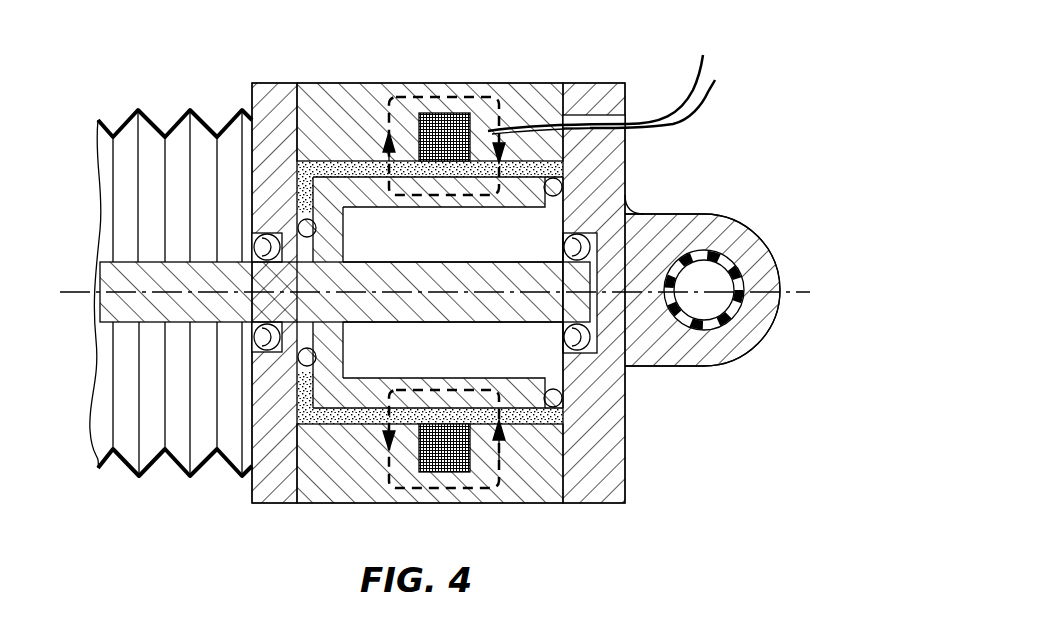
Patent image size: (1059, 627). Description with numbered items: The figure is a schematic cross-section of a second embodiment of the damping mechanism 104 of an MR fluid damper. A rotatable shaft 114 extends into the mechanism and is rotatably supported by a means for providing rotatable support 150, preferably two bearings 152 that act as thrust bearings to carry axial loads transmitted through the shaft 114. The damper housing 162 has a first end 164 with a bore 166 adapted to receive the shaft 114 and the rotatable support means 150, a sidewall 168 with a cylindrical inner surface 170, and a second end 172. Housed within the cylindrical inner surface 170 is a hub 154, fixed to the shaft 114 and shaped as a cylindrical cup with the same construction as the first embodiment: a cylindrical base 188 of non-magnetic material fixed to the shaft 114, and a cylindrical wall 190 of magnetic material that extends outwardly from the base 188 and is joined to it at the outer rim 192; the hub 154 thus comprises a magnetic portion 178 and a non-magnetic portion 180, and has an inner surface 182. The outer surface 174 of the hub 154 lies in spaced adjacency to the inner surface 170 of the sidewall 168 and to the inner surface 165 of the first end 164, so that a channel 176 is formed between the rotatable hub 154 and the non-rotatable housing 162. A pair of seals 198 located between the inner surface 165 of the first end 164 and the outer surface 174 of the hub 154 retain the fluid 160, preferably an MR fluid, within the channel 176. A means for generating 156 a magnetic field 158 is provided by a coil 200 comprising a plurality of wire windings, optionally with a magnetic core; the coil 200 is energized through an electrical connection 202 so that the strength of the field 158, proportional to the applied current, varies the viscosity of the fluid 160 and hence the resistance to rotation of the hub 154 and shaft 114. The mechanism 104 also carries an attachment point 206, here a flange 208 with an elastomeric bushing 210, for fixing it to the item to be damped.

The damping mechanism 104 is at (642, 42).
The rotatable shaft 114 is at (650, 235).
The means for providing rotatable support 150 is at (258, 242).
The bearing 152 is at (262, 250).
The hub 154 is at (523, 195).
The means for generating electromagnetic field 156 is at (470, 442).
The magnetic field 158 is at (498, 470).
The fluid 160 is at (560, 418).
The damper housing 162 is at (390, 100).
The first end 164 is at (252, 98).
The inner surface of first end 165 is at (297, 412).
The bore 166 is at (340, 347).
The sidewall 168 is at (345, 187).
The cylindrical inner surface 170 is at (422, 125).
The second end 172 is at (627, 108).
The outer surface of hub 174 is at (357, 424).
The channel 176 is at (322, 163).
The magnetic portion 178 is at (441, 95).
The non-magnetic portion 180 is at (169, 189).
The inner surface of hub 182 is at (402, 380).
The cylindrical base 188 is at (300, 212).
The cylindrical wall 190 is at (535, 178).
The outer rim 192 is at (358, 192).
The seal 198 is at (563, 187).
The coil 200 is at (448, 457).
The electrical connection 202 is at (683, 122).
The attachment point 206 is at (733, 214).
The flange 208 is at (747, 257).
The elastomeric bushing 210 is at (738, 313).